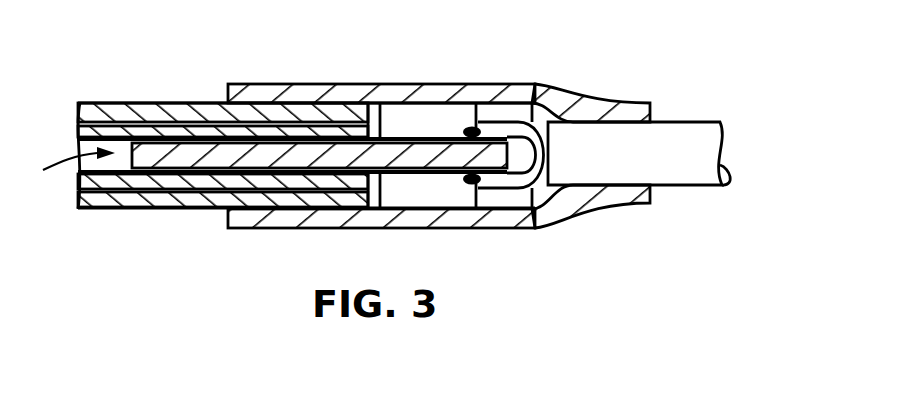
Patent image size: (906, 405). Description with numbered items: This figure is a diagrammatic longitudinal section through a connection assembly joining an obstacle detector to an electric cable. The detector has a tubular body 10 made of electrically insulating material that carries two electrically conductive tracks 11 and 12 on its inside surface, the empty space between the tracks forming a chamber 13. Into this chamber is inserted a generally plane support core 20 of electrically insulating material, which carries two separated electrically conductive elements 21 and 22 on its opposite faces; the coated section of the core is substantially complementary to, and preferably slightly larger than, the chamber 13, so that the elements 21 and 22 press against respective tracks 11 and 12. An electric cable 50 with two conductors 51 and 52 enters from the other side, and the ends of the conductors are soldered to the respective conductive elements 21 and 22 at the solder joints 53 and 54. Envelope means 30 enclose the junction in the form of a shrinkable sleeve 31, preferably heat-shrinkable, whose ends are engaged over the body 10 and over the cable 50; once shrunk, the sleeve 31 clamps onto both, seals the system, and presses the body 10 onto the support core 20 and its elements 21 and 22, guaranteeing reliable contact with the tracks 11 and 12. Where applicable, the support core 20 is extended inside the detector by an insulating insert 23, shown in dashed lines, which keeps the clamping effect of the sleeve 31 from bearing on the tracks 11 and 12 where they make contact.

The tubular body 10 is at (276, 134).
The electrically conductive track 11 is at (93, 128).
The electrically conductive track 12 is at (83, 188).
The chamber 13 is at (65, 165).
The support core 20 is at (292, 161).
The electrically conductive element 21 is at (378, 107).
The electrically conductive element 22 is at (387, 192).
The insert 23 is at (176, 150).
The envelope means 30 is at (550, 134).
The shrinkable sleeve 31 is at (257, 94).
The electric cable 50 is at (672, 140).
The conductor 51 is at (536, 90).
The conductor 52 is at (531, 204).
The solder joint 53 is at (470, 128).
The solder joint 54 is at (461, 206).